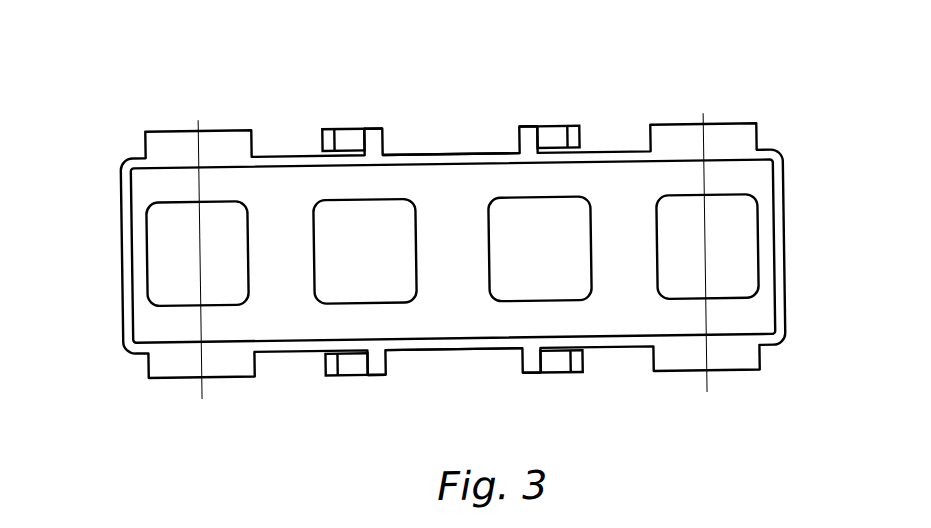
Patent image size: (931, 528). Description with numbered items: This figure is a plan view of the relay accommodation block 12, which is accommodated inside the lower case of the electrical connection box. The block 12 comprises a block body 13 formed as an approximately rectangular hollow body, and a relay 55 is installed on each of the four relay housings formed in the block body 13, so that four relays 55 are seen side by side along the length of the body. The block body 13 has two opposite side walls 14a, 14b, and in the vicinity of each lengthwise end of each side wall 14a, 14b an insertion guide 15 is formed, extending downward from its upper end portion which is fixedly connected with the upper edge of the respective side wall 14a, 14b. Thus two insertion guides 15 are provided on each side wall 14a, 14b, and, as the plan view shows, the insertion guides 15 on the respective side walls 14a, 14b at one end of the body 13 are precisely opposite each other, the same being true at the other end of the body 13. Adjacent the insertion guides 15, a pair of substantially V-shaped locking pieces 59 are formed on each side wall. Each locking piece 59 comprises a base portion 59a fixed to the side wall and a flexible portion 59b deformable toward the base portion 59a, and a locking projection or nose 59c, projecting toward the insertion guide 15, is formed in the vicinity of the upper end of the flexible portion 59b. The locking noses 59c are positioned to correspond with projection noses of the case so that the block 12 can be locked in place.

The relay accommodation block 12 is at (797, 155).
The block body 13 is at (784, 215).
The side wall 14a is at (473, 354).
The side wall 14b is at (473, 154).
The insertion guide 15 is at (180, 128).
The relay 55 is at (160, 257).
The locking piece 59 is at (363, 108).
The base portion 59a is at (378, 128).
The flexible portion 59b is at (347, 128).
The locking nose 59c is at (323, 140).